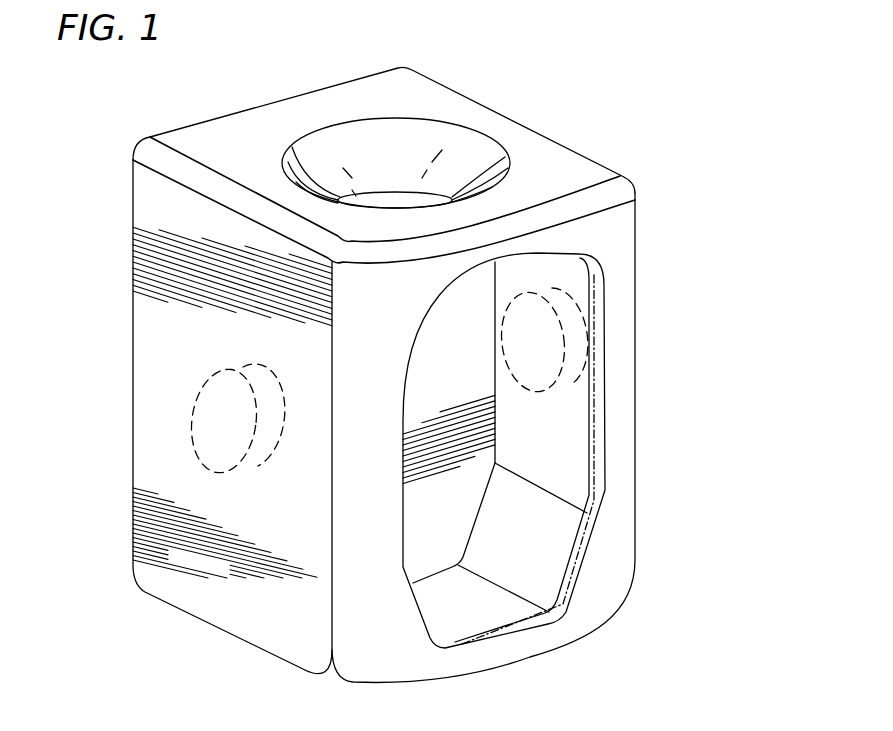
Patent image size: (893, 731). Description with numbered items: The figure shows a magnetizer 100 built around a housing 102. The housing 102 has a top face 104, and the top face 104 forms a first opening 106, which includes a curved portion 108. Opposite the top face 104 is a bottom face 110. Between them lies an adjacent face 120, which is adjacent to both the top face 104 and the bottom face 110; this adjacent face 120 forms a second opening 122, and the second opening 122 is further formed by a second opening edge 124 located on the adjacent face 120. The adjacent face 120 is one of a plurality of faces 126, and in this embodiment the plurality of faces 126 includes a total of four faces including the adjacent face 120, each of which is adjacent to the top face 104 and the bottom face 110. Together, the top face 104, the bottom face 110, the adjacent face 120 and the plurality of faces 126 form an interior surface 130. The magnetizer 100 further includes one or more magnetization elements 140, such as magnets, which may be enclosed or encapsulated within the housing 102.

The magnetizer 100 is at (716, 129).
The housing 102 is at (453, 88).
The top face 104 is at (198, 148).
The first opening 106 is at (356, 120).
The curved portion 108 is at (470, 147).
The bottom face 110 is at (262, 648).
The adjacent face 120 is at (388, 618).
The second opening 122 is at (603, 323).
The second opening edge 124 is at (603, 425).
The plurality of faces 126 is at (605, 243).
The interior surface 130 is at (543, 463).
The magnetization elements 140 is at (192, 415).